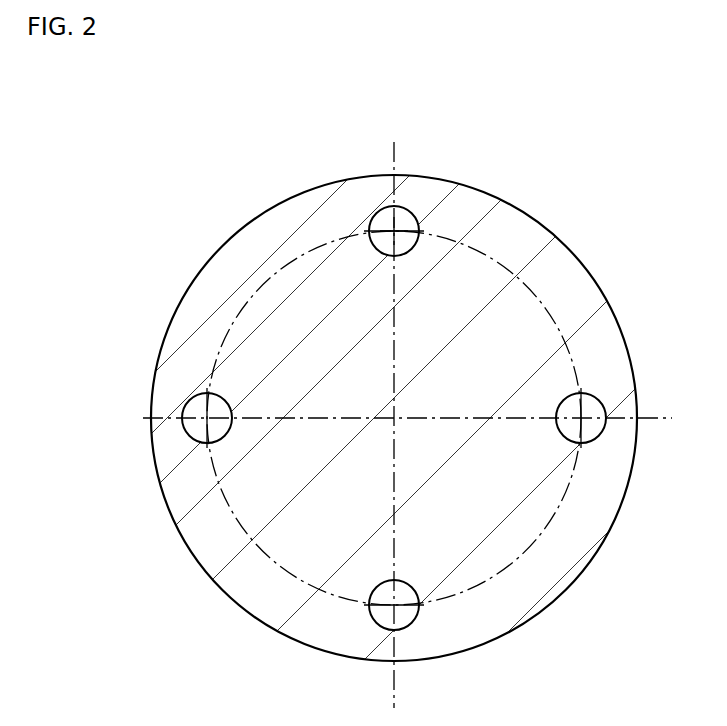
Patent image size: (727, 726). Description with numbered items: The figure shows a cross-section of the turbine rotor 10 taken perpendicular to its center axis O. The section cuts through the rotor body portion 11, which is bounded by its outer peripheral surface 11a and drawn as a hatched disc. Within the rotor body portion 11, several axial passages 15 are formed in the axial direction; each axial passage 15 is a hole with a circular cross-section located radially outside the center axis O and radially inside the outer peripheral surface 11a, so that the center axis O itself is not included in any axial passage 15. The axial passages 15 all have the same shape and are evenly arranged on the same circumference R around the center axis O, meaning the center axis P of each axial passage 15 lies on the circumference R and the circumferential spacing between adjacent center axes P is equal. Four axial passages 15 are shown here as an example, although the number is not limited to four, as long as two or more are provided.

The turbine rotor 10 is at (363, 363).
The rotor body portion 11 is at (363, 363).
The outer peripheral surface 11a is at (620, 318).
The axial passage 15 is at (412, 210).
The center axis O is at (393, 419).
The center axis of axial passage P is at (380, 214).
The circumference R is at (520, 557).